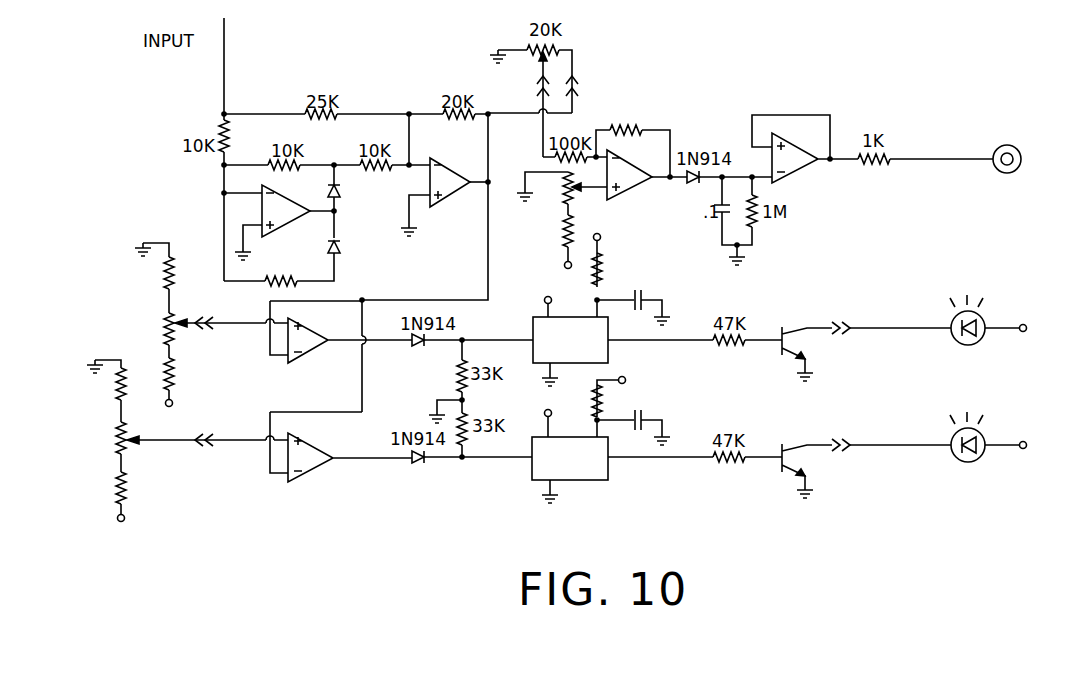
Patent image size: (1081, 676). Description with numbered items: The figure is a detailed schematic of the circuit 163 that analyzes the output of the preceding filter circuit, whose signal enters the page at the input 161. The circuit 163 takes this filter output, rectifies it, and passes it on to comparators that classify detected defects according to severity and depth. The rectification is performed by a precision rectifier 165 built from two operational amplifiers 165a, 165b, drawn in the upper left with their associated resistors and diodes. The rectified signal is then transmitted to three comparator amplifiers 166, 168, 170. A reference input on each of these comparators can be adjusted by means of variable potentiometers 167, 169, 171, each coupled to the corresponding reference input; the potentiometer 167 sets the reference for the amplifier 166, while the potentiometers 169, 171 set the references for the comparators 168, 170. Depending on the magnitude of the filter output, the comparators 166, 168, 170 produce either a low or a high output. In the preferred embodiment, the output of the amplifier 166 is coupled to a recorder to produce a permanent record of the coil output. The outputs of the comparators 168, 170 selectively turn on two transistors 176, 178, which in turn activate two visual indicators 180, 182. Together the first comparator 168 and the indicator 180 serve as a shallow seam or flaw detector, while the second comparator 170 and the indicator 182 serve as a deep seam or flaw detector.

The input signal line 161 is at (227, 55).
The circuit 163 is at (514, 482).
The precision rectifier 165 is at (317, 208).
The operational amplifier 165a is at (275, 208).
The operational amplifier 165b is at (446, 177).
The comparator amplifier 166 is at (628, 175).
The variable potentiometer 167 is at (574, 194).
The comparator amplifier 168 is at (313, 342).
The variable potentiometer 169 is at (172, 316).
The comparator amplifier 170 is at (308, 462).
The variable potentiometer 171 is at (128, 446).
The transistor 176 is at (790, 355).
The transistor 178 is at (790, 472).
The visual indicator 180 is at (981, 317).
The visual indicator 182 is at (972, 462).